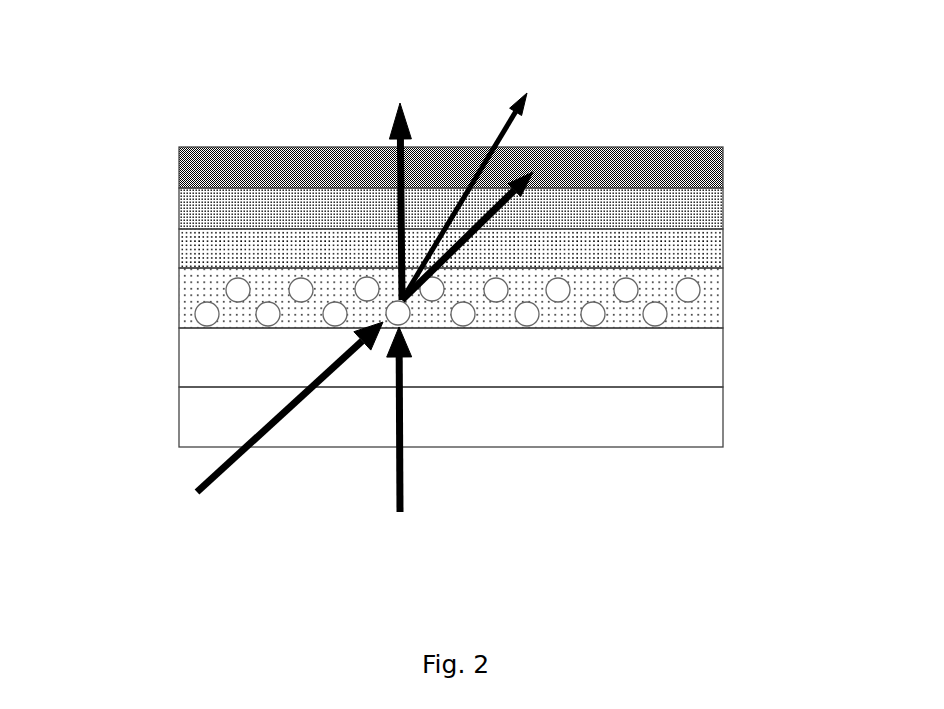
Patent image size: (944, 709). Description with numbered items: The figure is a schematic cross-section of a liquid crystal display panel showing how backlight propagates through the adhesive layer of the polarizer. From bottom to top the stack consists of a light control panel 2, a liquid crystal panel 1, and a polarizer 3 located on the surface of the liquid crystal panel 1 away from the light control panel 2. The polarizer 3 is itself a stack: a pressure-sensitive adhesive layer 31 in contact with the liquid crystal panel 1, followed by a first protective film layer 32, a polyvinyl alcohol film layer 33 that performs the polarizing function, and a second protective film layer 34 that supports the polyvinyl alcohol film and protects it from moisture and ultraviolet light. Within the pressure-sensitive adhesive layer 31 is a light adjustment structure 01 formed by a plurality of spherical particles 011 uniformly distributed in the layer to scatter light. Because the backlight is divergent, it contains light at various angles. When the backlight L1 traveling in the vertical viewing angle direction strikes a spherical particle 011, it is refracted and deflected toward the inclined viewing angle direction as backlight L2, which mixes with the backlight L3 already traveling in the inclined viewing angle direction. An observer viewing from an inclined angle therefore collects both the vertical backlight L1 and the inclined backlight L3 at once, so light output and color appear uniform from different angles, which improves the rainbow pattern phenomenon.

The liquid crystal panel 1 is at (690, 356).
The light control panel 2 is at (690, 416).
The polarizer 3 is at (451, 237).
The pressure-sensitive adhesive layer 31 is at (426, 298).
The first protective film layer 32 is at (693, 248).
The polyvinyl alcohol film layer 33 is at (693, 209).
The second protective film layer 34 is at (723, 167).
The light adjustment structure 01 is at (371, 300).
The spherical particles 011 is at (236, 286).
The backlight in the vertical viewing angle direction L1 is at (400, 324).
The backlight in the inclined viewing angle direction (deflected) L2 is at (470, 184).
The backlight in the inclined viewing angle direction L3 is at (353, 349).